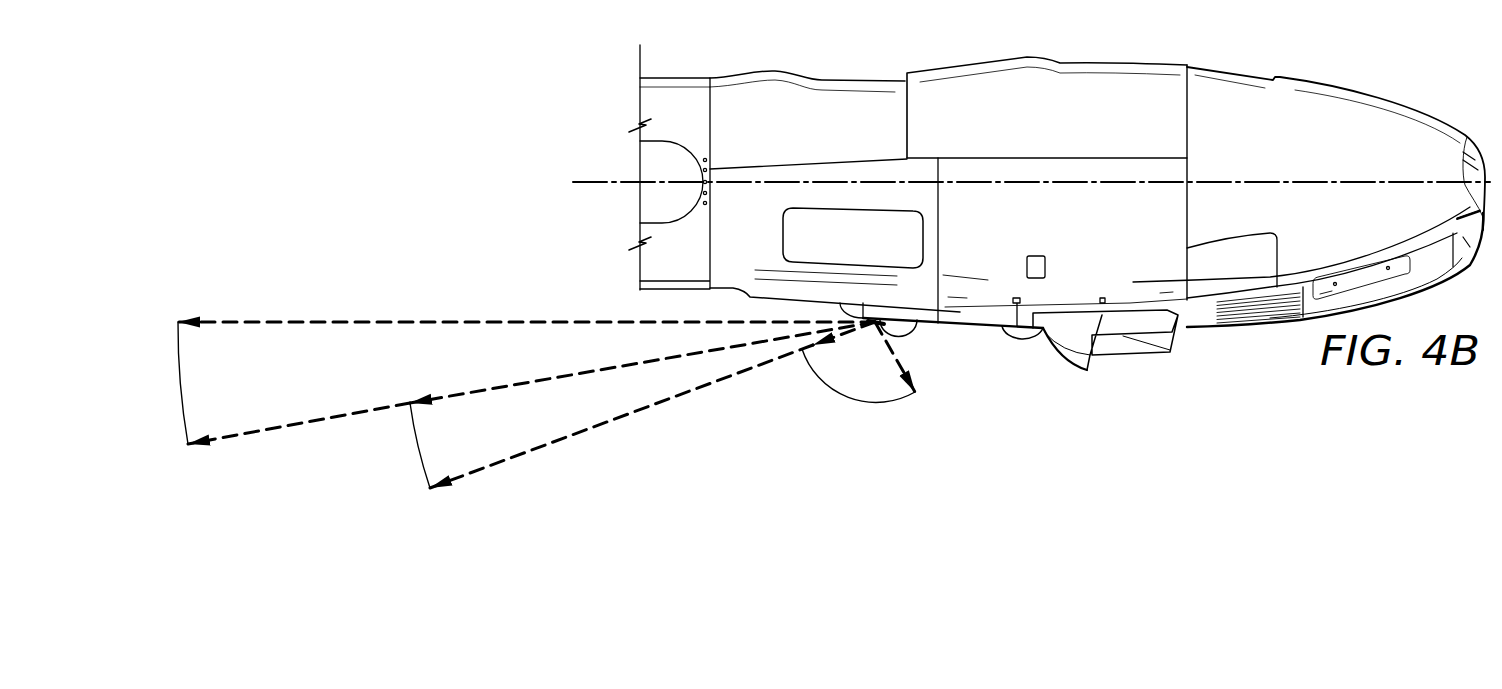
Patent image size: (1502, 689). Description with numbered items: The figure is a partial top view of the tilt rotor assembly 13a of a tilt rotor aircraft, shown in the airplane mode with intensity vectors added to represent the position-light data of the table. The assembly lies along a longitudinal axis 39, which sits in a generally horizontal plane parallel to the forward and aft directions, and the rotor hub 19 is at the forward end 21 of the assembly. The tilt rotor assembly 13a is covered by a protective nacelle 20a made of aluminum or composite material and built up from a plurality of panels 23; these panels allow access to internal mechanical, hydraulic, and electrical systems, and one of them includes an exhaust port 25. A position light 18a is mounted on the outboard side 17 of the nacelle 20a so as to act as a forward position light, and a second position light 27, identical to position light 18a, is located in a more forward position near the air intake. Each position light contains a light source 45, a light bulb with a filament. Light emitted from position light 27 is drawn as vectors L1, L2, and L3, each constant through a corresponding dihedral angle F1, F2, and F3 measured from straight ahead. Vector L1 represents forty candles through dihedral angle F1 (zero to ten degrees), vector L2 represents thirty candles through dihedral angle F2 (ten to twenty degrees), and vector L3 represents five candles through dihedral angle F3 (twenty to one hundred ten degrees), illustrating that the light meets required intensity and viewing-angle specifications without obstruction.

The tilt rotor assembly 13a is at (1333, 77).
The outboard side 17 is at (1207, 332).
The position light 18a is at (1010, 343).
The rotor hub 19 is at (678, 77).
The nacelle 20a is at (960, 65).
The forward end 21 is at (718, 68).
The panel 23 is at (783, 232).
The exhaust port 25 is at (1132, 353).
The position light 27 is at (917, 337).
The longitudinal axis 39 is at (593, 180).
The light source 45 is at (877, 327).
The light vector L1 is at (298, 322).
The light vector L2 is at (620, 417).
The light vector L3 is at (907, 357).
The dihedral angle F1 is at (182, 412).
The dihedral angle F2 is at (422, 460).
The dihedral angle F3 is at (852, 402).